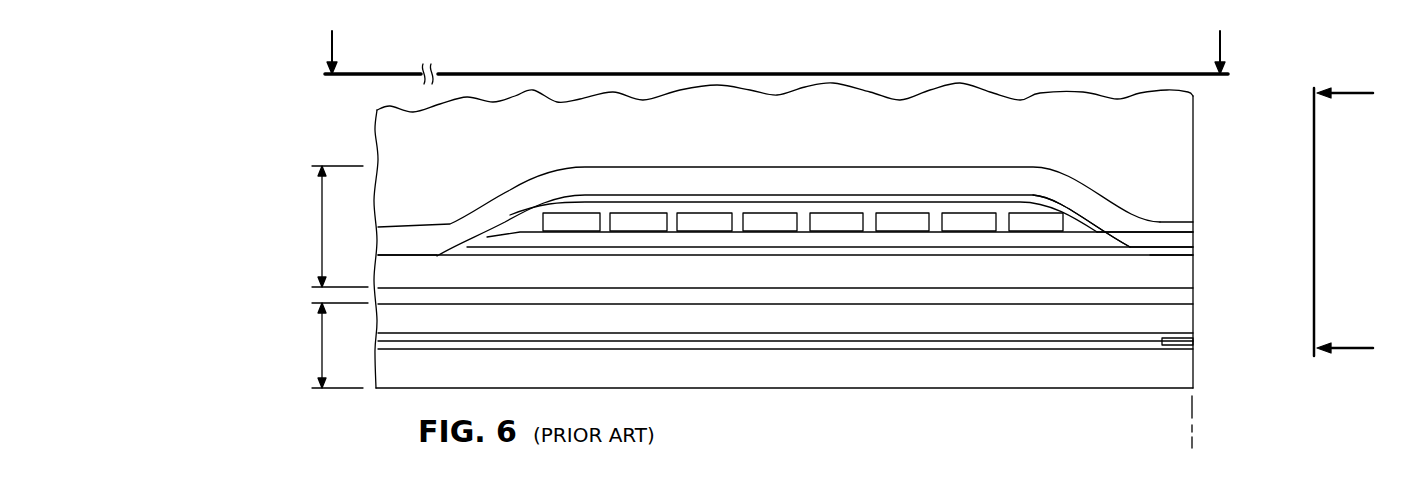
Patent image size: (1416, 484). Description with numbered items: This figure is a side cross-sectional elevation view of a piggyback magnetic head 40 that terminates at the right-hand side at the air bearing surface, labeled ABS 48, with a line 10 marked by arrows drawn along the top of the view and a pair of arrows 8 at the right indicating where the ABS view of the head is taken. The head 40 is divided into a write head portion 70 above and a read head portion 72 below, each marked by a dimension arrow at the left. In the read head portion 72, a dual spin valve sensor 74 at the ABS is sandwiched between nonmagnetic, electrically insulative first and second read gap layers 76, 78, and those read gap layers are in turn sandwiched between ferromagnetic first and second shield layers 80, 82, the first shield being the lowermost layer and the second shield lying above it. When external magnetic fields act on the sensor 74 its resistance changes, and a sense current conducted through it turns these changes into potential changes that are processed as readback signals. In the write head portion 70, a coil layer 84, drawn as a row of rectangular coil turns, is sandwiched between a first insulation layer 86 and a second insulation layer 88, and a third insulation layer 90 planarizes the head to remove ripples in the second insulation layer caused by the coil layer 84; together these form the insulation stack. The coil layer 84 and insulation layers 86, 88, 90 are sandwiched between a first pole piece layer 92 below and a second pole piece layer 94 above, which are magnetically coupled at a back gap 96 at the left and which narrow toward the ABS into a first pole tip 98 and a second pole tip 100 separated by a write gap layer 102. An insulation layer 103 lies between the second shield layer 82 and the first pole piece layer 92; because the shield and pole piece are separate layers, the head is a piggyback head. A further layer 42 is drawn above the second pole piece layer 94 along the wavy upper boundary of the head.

The section line 8- 8 is at (1355, 220).
The view direction line 10 is at (775, 54).
The piggyback magnetic head 40 is at (358, 120).
The overcoat layer 42 is at (1178, 122).
The air bearing surface (ABS) 48 is at (1194, 443).
The write head portion 70 is at (320, 231).
The read head portion 72 is at (320, 350).
The dual spin valve sensor 74 is at (1193, 343).
The first read gap layer 76 is at (853, 350).
The second read gap layer 78 is at (820, 332).
The first shield layer 80 is at (957, 373).
The second shield layer 82 is at (1063, 322).
The coil layer 84 is at (765, 218).
The first insulation layer 86 is at (740, 240).
The second insulation layer 88 is at (1095, 220).
The third insulation layer 90 is at (612, 198).
The first pole piece layer 92 is at (1110, 277).
The second pole piece layer 94 is at (973, 178).
The back gap 96 is at (417, 250).
The first pole tip 98 is at (1193, 274).
The second pole tip 100 is at (1187, 231).
The write gap layer 102 is at (1192, 250).
The insulation layer 103 is at (1017, 297).